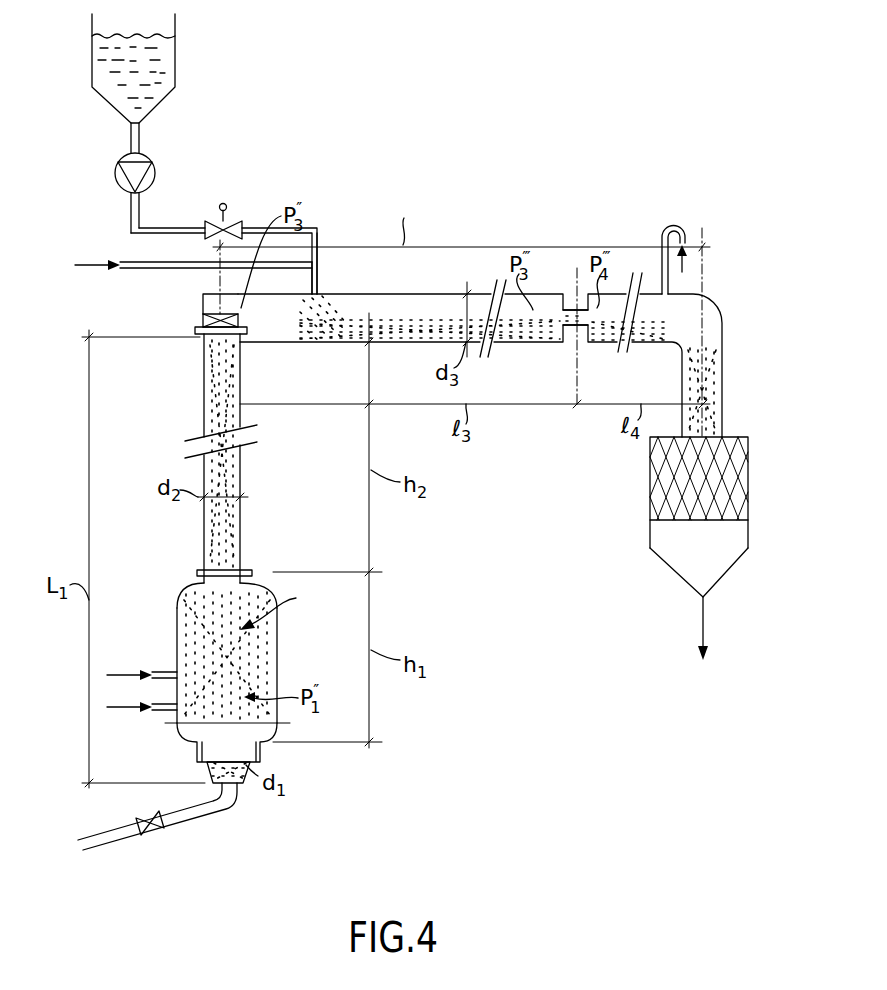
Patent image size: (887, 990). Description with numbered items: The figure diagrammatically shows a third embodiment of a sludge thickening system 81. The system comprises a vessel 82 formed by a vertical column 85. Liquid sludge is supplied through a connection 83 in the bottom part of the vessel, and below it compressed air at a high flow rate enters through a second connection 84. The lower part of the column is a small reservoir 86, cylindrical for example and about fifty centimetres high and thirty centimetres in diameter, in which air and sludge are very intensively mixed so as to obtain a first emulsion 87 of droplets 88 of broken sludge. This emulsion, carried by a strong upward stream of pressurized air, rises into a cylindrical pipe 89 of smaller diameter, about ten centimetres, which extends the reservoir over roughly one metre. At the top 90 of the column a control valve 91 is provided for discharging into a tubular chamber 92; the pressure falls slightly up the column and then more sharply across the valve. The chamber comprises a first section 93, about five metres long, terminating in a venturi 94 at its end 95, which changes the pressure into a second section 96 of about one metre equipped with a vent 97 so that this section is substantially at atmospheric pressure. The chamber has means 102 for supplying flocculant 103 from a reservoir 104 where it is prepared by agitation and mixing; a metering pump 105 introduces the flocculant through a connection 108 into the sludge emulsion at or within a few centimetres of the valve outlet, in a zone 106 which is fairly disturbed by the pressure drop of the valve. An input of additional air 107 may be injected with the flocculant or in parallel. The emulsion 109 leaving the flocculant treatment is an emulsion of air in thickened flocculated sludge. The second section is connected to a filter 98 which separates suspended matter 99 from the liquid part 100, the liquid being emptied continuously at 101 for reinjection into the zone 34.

The flocculant 103 is at (158, 47).
The reservoir 104 is at (113, 107).
The metering pump 105 is at (156, 162).
The means for supplying flocculant 102 is at (253, 207).
The input of additional air 107 is at (130, 262).
The connection 108 is at (318, 288).
The zone 106 is at (323, 307).
The system 81 is at (496, 247).
The control valve 91 is at (215, 314).
The top of the chamber 90 is at (201, 323).
The cylindrical pipe 89 is at (203, 368).
The vessel 82 is at (200, 530).
The vertical column 85 is at (241, 530).
The reservoir 86 is at (279, 664).
The first emulsion 87 is at (282, 608).
The droplets 88 is at (212, 405).
The connection 83 is at (162, 670).
The second connection 84 is at (160, 712).
The tubular chamber 92 is at (436, 293).
The first section 93 is at (410, 343).
The emulsion 109 is at (333, 333).
The end of the first section 95 is at (558, 306).
The venturi 94 is at (578, 302).
The second section 96 is at (650, 290).
The vent 97 is at (670, 276).
The filter 98 is at (650, 455).
The suspended matter 99 is at (668, 492).
The liquid part 100 is at (675, 547).
The outlet 101 is at (703, 614).
The zone 34 is at (717, 685).